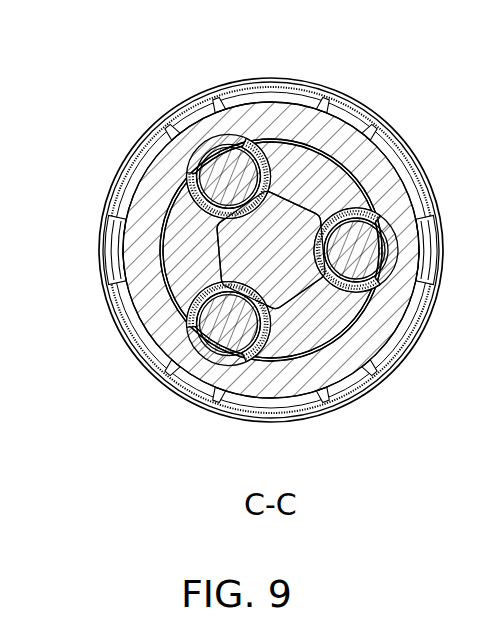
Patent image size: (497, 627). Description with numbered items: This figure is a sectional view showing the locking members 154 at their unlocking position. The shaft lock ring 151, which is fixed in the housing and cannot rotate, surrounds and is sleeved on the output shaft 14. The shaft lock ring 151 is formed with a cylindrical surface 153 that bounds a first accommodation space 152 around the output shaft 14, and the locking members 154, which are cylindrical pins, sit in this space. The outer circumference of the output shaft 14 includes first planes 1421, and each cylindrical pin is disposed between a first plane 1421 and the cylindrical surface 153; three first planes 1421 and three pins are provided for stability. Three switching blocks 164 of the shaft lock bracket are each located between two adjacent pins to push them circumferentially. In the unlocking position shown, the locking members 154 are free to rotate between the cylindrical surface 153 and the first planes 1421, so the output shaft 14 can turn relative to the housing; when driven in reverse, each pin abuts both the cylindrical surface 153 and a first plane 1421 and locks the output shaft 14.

The output shaft 14 is at (293, 270).
The shaft lock ring 151 is at (170, 347).
The first accommodation space 152 is at (196, 175).
The cylindrical surface 153 is at (162, 243).
The locking members 154 is at (230, 165).
The switching blocks 164 is at (188, 297).
The first planes 1421 is at (222, 213).